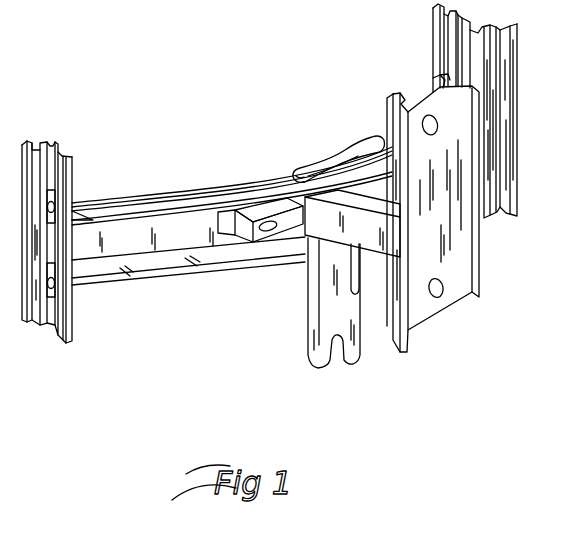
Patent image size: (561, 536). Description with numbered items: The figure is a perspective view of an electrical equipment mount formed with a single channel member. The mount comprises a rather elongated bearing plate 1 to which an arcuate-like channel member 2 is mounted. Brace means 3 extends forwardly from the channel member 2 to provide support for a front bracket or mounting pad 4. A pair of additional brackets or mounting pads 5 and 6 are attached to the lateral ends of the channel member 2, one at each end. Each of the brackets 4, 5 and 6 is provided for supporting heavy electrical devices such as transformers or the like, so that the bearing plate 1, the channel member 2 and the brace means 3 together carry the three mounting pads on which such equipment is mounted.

The bearing plate 1 is at (310, 330).
The channel member 2 is at (145, 187).
The brace means 3 is at (316, 236).
The front bracket or mounting pad 4 is at (482, 256).
The bracket or mounting pad 5 is at (34, 136).
The bracket or mounting pad 6 is at (444, 8).